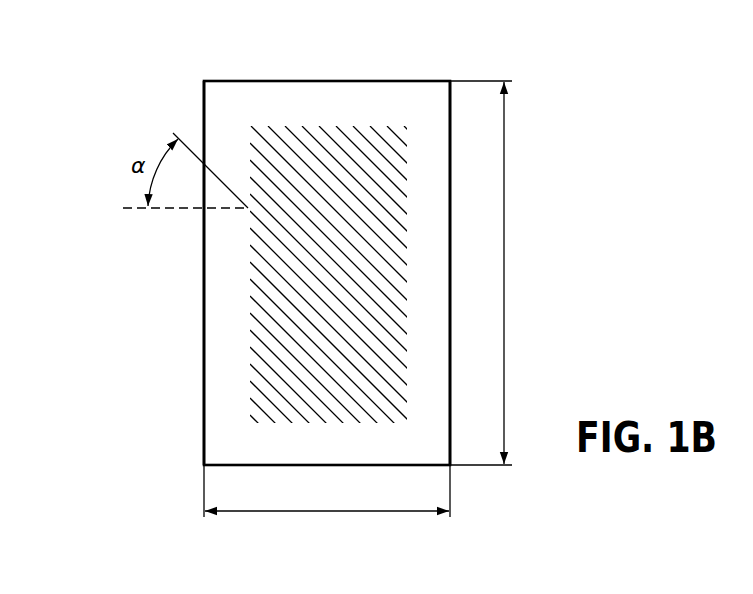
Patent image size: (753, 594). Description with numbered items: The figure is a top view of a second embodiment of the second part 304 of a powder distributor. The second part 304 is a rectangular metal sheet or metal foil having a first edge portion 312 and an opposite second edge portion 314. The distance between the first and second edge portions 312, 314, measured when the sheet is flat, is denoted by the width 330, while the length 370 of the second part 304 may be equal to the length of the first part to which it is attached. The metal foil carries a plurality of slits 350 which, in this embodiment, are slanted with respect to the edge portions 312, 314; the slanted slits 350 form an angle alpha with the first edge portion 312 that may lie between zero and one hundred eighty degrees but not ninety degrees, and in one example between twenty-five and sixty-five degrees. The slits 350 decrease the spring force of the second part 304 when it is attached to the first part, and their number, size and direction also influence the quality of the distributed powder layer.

The second part 304 is at (123, 77).
The first edge portion 312 is at (203, 298).
The second edge portion 314 is at (452, 208).
The slits 350 is at (257, 335).
The length of the second part 370 is at (505, 272).
The distance between the first and second opposite edge portions 330 is at (327, 511).